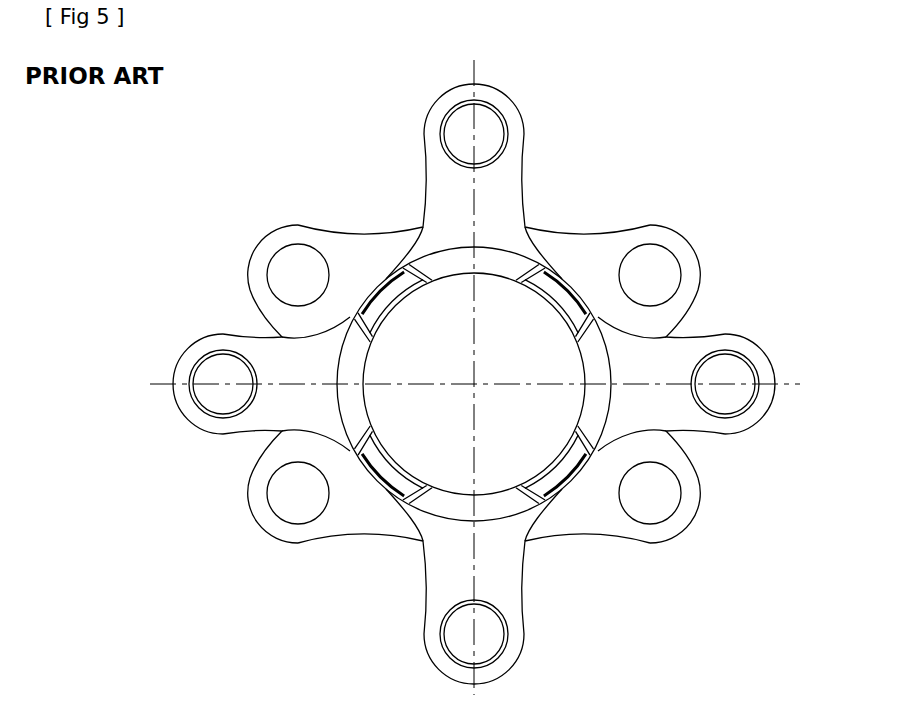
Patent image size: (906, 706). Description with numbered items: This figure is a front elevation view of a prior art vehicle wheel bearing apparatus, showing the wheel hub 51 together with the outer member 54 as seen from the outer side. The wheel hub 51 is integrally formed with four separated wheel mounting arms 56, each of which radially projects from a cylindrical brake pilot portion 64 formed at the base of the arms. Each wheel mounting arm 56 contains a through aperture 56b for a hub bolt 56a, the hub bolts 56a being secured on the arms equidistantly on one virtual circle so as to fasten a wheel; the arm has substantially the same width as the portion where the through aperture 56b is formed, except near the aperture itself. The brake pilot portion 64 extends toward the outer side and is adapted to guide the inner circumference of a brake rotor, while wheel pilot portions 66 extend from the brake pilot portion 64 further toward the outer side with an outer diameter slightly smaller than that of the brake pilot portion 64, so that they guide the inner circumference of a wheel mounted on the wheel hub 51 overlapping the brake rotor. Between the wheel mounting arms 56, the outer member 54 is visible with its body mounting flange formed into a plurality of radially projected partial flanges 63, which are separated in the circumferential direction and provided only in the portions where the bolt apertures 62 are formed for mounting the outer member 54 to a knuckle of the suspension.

The wheel hub 51 is at (242, 439).
The outer member 54 is at (605, 233).
The wheel mounting arm 56 is at (515, 131).
The hub bolt 56a is at (457, 140).
The through aperture 56b is at (483, 117).
The bolt aperture 62 is at (283, 268).
The partial flange 63 is at (277, 238).
The brake pilot portion 64 is at (497, 247).
The wheel pilot portion 66 is at (388, 288).